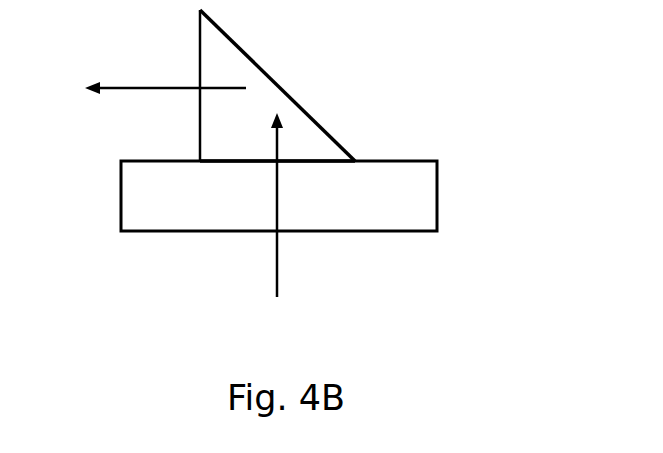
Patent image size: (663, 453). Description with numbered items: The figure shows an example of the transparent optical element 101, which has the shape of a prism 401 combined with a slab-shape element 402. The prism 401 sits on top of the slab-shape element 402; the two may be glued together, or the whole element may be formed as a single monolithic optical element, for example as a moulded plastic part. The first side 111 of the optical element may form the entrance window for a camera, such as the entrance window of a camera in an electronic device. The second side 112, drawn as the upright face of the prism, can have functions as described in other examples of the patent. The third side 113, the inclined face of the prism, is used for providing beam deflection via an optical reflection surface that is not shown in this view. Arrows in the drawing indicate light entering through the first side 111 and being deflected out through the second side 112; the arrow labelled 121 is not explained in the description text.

The optical element 101 is at (360, 32).
The first side 111 is at (387, 238).
The second side 112 is at (197, 35).
The third side 113 is at (225, 25).
The incident light beam 121 is at (272, 283).
The prism 401 is at (277, 106).
The slab-shape element 402 is at (387, 170).